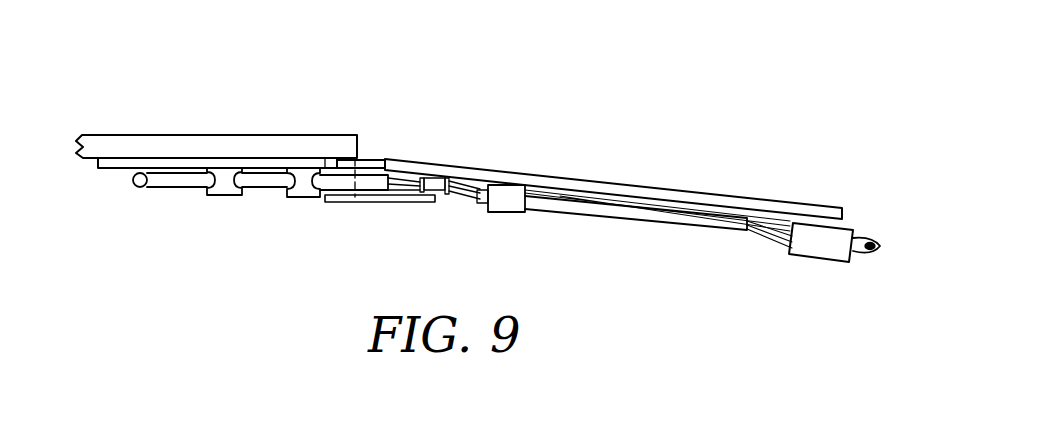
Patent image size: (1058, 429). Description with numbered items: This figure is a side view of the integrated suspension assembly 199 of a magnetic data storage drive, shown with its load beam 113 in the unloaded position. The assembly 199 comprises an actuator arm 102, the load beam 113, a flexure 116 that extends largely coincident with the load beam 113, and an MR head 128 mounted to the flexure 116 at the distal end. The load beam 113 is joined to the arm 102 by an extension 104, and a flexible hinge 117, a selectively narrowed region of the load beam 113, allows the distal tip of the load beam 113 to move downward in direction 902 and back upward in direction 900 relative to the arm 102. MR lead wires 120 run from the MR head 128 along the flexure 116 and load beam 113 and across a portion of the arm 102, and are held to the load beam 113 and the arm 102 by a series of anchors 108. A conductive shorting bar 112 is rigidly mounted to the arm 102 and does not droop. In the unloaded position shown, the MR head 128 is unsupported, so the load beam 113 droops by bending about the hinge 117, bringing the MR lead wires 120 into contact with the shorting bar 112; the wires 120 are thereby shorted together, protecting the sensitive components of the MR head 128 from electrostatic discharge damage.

The actuator arm 102 is at (228, 133).
The extension 104 is at (110, 172).
The anchors 108 is at (227, 196).
The conductive shorting bar 112 is at (431, 204).
The load beam 113 is at (680, 192).
The flexure 116 is at (850, 226).
The flexible hinge 117 is at (378, 158).
The MR lead wires 120 is at (620, 207).
The MR head 128 is at (807, 258).
The integrated suspension assembly 199 is at (231, 269).
The upward direction 900 is at (900, 54).
The downward direction 902 is at (863, 391).